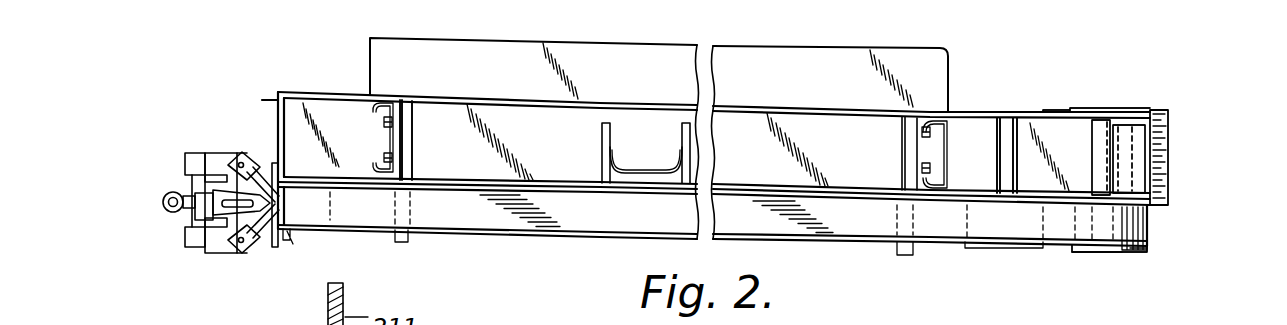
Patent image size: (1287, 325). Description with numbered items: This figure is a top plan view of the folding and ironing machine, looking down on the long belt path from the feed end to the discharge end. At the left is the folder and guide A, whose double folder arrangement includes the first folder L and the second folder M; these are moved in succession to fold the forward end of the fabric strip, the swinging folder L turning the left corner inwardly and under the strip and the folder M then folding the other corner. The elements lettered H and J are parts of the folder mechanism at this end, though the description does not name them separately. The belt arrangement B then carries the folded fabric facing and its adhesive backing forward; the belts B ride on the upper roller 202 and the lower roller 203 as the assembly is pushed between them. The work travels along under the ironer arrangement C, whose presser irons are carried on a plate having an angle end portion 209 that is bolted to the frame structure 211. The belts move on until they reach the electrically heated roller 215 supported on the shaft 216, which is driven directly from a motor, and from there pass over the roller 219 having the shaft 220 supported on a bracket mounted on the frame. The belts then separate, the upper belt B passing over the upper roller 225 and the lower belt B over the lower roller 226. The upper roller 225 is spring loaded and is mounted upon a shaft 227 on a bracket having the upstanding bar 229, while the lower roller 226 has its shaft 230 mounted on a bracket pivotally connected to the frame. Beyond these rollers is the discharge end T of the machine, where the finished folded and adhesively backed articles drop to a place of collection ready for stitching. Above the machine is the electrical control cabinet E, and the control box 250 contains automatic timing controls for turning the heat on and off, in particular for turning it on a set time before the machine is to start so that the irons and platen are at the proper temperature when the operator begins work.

The folder and guide A is at (220, 263).
The coupling hook H is at (190, 183).
The coupling link J is at (183, 213).
The first folder L is at (263, 167).
The second folder M is at (258, 243).
The belt arrangement B is at (564, 203).
The ironer arrangement C is at (868, 203).
The electrical control cabinet E is at (932, 72).
The discharge end T is at (1157, 228).
The control box 250 is at (600, 57).
The upper roller 202 is at (307, 233).
The lower roller 203 is at (307, 233).
The angle end portion 209 is at (741, 207).
The frame structure 211 is at (473, 176).
The electrically heated roller 215 is at (983, 246).
The roller 219 is at (983, 246).
The shaft 216 is at (1020, 98).
The shaft 220 is at (1020, 98).
The upper roller 225 is at (1105, 252).
The lower roller 226 is at (1140, 252).
The shaft 227 is at (1105, 153).
The shaft 230 is at (1105, 153).
The upstanding bar 229 is at (1187, 98).